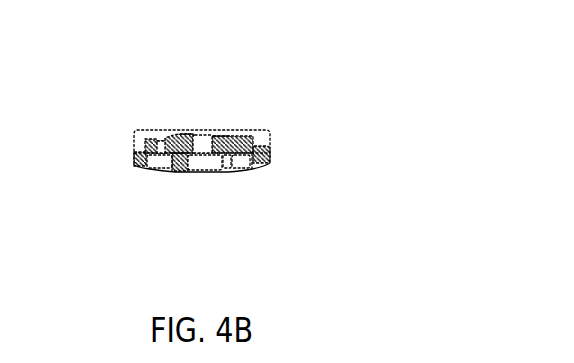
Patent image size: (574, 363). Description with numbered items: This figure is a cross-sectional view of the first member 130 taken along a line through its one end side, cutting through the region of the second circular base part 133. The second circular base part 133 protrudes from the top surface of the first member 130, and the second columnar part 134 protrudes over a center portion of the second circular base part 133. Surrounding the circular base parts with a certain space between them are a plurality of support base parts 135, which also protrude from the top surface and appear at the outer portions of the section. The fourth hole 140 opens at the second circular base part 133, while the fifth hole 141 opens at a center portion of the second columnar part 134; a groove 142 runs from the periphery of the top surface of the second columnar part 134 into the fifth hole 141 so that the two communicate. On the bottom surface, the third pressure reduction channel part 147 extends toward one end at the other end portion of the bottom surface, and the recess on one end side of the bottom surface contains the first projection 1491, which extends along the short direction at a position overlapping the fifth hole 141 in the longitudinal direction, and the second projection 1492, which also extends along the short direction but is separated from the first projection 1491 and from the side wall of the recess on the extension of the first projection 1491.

The first member 130 is at (378, 80).
The second circular base part 133 is at (243, 137).
The second columnar part 134 is at (218, 137).
The support base part 135 is at (146, 141).
The fourth hole 140 is at (155, 139).
The fifth hole 141 is at (202, 135).
The groove 142 is at (207, 135).
The third pressure reduction channel part 147 is at (158, 172).
The first projection 1491 is at (203, 172).
The second projection 1492 is at (247, 170).